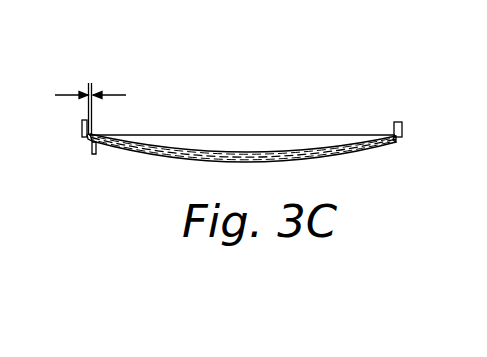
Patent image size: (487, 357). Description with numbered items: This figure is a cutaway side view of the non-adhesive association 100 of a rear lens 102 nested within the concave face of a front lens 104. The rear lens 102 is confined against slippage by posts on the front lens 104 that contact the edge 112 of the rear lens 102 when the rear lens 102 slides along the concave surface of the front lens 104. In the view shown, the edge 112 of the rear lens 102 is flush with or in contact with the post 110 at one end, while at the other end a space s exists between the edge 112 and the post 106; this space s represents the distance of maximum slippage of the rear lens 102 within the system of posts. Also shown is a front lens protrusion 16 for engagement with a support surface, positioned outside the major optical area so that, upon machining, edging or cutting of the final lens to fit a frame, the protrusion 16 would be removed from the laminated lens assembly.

The non-adhesive association 100 is at (311, 92).
The rear lens 102 is at (393, 133).
The front lens 104 is at (380, 148).
The post 106 is at (80, 128).
The post 110 is at (404, 128).
The edge of the rear lens 112 is at (92, 138).
The front lens protrusion 16 is at (92, 154).
The space s is at (62, 95).